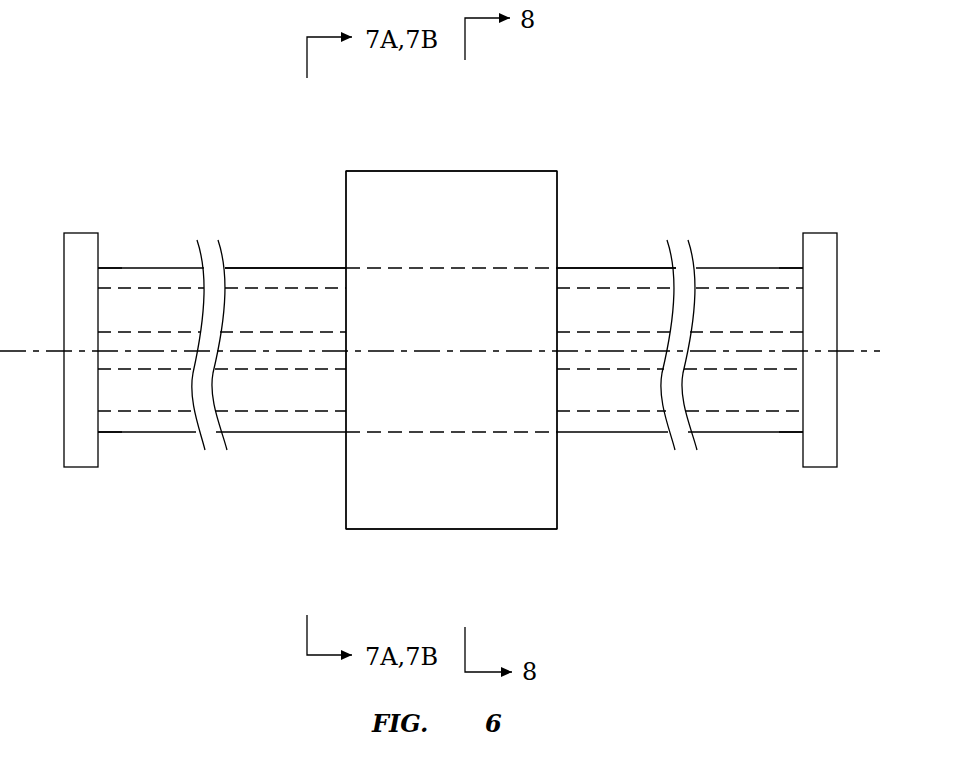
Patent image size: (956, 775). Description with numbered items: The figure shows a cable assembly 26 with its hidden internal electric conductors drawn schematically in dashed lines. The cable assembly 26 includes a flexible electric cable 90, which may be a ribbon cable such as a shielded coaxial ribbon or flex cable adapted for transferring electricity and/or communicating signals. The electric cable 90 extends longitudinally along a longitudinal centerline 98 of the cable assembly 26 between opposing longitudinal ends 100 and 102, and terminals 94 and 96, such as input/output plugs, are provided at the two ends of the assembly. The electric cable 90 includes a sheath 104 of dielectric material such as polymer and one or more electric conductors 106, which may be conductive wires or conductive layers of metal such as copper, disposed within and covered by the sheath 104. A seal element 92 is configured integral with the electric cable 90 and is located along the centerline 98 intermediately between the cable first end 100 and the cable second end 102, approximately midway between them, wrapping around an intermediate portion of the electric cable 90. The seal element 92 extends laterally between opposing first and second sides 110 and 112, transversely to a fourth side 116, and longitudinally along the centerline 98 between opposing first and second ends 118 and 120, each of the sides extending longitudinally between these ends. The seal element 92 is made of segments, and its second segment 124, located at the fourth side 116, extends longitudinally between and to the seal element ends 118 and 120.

The cable assembly 26 is at (798, 149).
The electric cable 90 is at (285, 434).
The seal element 92 is at (525, 170).
The terminal 94 is at (70, 469).
The terminal 96 is at (822, 469).
The longitudinal centerline 98 is at (15, 353).
The longitudinal end 100 is at (100, 434).
The longitudinal end 102 is at (803, 434).
The sheath 104 is at (280, 267).
The electric conductors 106 is at (152, 332).
The first side 110 is at (387, 529).
The second side 112 is at (387, 171).
The fourth side 116 is at (520, 511).
The first end 118 is at (346, 509).
The second end 120 is at (557, 509).
The second segment 124 is at (427, 170).